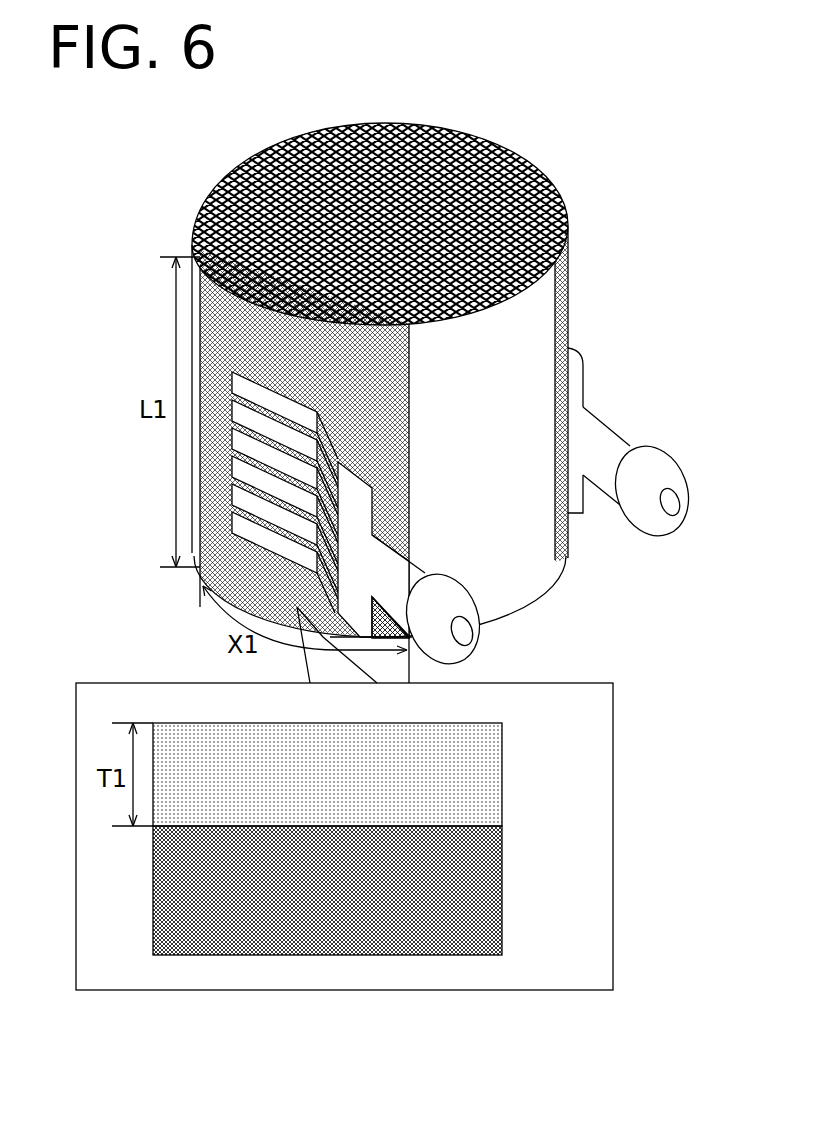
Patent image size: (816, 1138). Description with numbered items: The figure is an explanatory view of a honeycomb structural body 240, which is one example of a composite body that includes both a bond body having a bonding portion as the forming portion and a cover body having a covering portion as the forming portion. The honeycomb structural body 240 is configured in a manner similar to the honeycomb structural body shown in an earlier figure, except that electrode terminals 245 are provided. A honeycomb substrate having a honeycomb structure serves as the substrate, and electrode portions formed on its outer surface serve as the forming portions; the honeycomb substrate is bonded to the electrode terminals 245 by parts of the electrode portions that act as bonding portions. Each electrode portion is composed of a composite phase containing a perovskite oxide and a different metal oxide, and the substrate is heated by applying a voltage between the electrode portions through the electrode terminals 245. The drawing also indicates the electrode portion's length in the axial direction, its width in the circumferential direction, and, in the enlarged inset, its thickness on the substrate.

The honeycomb structural body 240 is at (449, 397).
The electrode terminal 245 is at (368, 483).